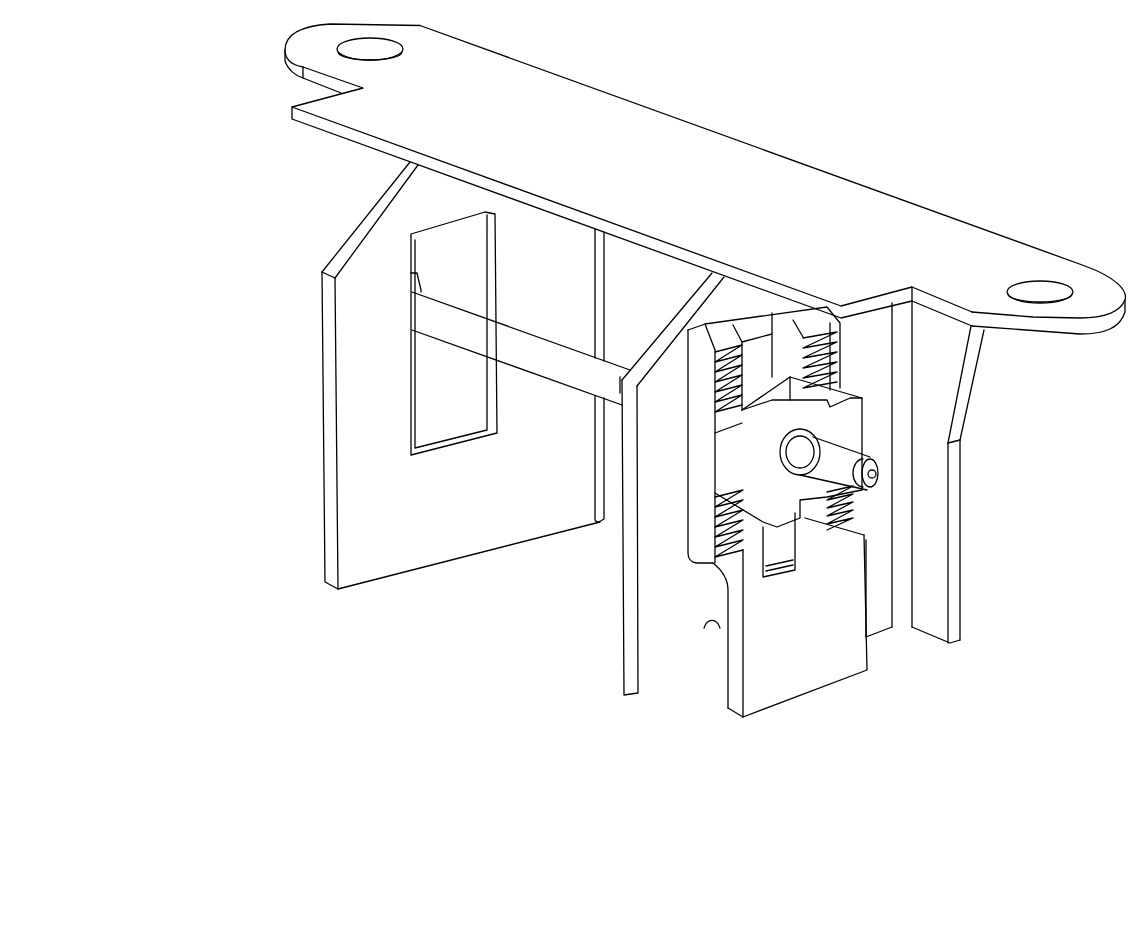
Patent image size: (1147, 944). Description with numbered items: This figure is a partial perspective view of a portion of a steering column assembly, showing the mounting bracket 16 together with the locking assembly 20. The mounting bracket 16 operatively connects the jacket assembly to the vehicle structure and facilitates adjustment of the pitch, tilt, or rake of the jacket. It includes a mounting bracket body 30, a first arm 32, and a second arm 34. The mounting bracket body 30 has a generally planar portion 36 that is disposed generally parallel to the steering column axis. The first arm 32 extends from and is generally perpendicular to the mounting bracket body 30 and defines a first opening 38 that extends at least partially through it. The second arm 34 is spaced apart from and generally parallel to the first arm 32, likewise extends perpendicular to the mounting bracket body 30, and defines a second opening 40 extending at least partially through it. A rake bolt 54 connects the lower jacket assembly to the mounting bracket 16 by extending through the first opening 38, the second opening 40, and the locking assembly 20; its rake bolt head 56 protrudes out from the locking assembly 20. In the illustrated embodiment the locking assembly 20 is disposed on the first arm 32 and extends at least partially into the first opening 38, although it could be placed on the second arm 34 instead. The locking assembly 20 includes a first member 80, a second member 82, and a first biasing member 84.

The mounting bracket 16 is at (245, 262).
The locking assembly 20 is at (823, 701).
The mounting bracket body 30 is at (717, 130).
The first arm 32 is at (628, 616).
The second arm 34 is at (325, 492).
The generally planar portion 36 is at (730, 200).
The first opening 38 is at (760, 363).
The second opening 40 is at (433, 405).
The rake bolt 54 is at (589, 375).
The rake bolt head 56 is at (878, 478).
The first member 80 is at (870, 413).
The second member 82 is at (769, 310).
The first biasing member 84 is at (797, 560).